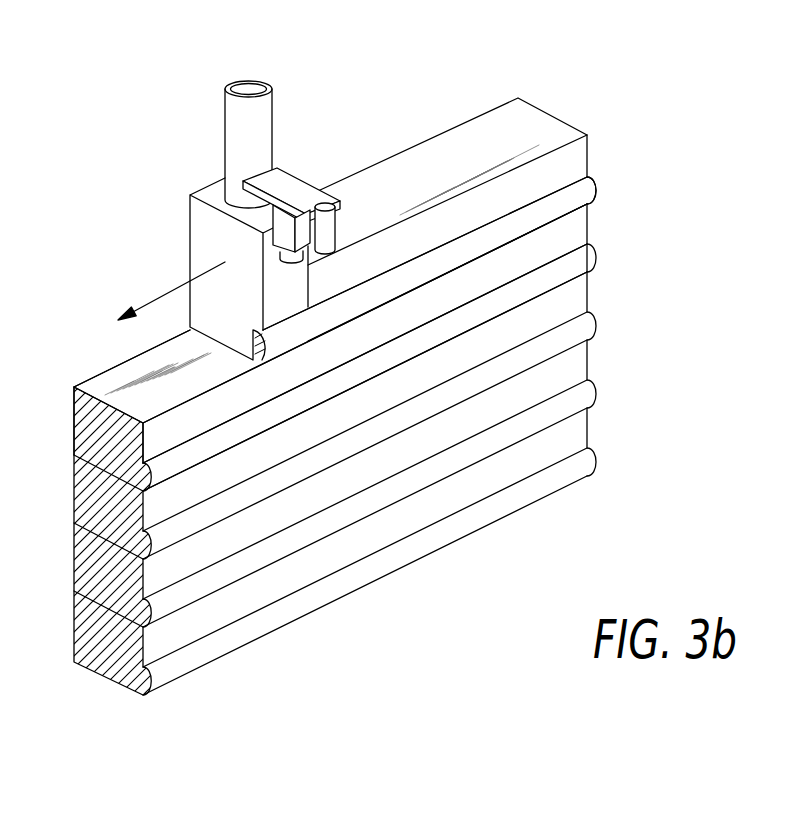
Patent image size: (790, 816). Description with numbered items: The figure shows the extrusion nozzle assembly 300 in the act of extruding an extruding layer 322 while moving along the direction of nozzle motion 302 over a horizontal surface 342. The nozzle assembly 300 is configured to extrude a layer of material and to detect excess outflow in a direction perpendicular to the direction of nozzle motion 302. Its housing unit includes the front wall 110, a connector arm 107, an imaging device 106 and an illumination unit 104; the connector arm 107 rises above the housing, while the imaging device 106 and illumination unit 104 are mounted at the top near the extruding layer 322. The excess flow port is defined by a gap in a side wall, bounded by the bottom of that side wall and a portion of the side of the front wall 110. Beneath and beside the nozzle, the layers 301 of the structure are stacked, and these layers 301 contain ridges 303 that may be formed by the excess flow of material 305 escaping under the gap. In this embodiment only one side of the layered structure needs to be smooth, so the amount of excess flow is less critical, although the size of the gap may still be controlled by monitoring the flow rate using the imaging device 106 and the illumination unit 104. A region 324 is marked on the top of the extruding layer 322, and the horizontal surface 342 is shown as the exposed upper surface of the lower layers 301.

The extrusion nozzle assembly 300 is at (305, 93).
The layers 301 is at (638, 195).
The direction of nozzle motion 302 is at (177, 291).
The ridges 303 is at (595, 262).
The excess flow of material 305 is at (582, 193).
The extruding layer 322 is at (428, 196).
The contact area on top plate 324 is at (427, 156).
The horizontal surface 342 is at (122, 380).
The front wall 110 is at (203, 242).
The connector arm 107 is at (268, 185).
The imaging device 106 is at (305, 230).
The illumination unit 104 is at (338, 225).